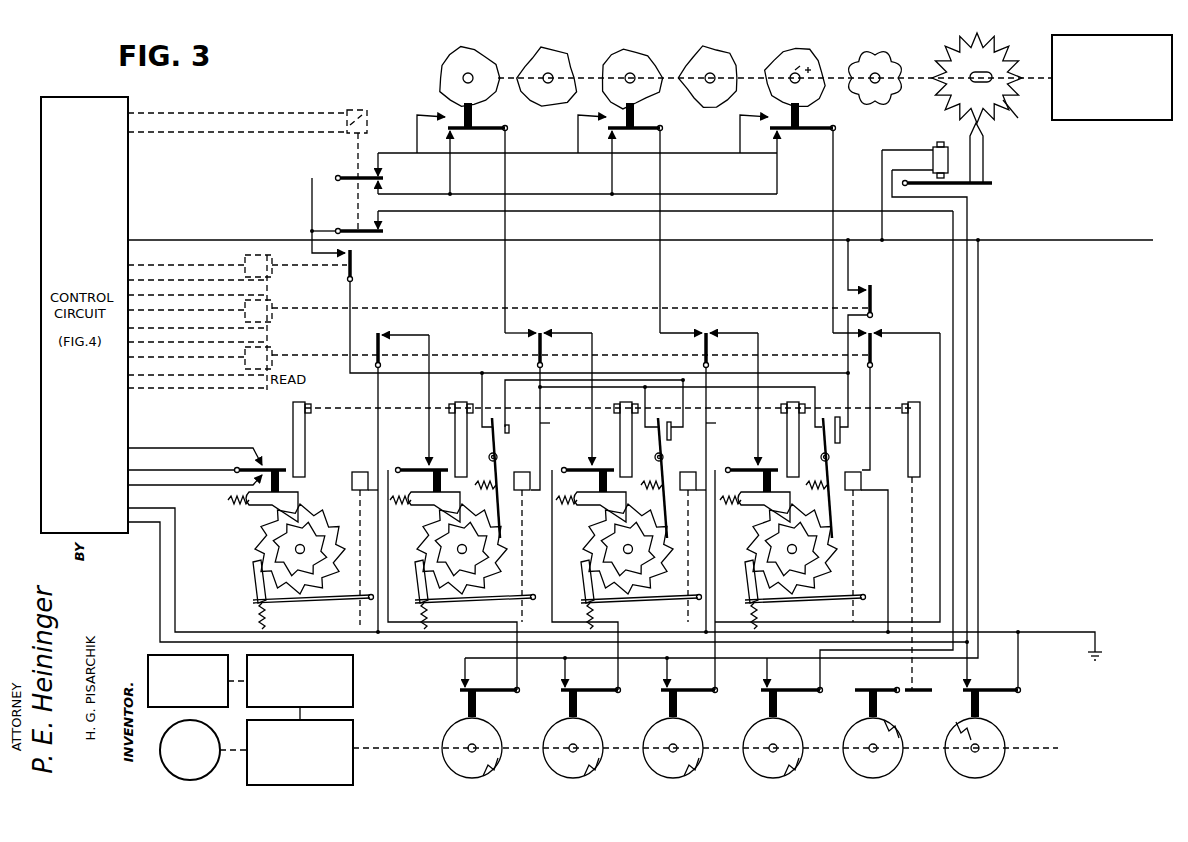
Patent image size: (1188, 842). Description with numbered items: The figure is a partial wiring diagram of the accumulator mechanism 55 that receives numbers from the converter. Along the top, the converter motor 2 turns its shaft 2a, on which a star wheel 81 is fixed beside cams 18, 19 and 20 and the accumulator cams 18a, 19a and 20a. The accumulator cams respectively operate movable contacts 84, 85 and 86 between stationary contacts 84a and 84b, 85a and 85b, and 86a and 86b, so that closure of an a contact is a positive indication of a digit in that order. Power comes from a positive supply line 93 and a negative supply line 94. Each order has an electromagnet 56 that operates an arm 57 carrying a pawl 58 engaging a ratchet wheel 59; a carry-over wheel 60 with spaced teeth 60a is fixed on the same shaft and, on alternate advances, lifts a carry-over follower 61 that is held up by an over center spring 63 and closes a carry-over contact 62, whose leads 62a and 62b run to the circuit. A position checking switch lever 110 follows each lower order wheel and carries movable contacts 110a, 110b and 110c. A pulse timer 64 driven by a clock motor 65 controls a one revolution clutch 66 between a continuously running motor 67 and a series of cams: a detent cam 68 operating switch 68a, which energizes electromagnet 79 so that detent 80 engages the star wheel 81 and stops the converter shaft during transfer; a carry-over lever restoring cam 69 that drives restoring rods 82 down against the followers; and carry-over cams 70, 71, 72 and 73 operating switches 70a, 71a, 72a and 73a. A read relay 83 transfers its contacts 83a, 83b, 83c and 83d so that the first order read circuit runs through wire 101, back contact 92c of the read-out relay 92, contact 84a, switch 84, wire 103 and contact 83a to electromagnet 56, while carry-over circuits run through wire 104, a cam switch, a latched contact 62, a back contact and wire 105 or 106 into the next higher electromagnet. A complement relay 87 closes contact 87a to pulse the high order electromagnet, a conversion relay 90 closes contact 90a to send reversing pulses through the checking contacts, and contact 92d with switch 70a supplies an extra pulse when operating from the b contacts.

The converter motor 2 is at (1072, 118).
The converter motor shaft 2a is at (1005, 60).
The cam 18 is at (892, 58).
The accumulator cam 18a is at (812, 60).
The cam 19 is at (730, 60).
The accumulator cam 19a is at (650, 60).
The cam 20 is at (558, 60).
The accumulator cam 20a is at (478, 63).
The counter unit 55 is at (878, 546).
The electromagnet 56 is at (358, 470).
The arm 57 is at (330, 602).
The pawl 58 is at (253, 583).
The ratchet wheel 59 is at (258, 510).
The carry-over wheel 60 is at (278, 552).
The teeth 60a is at (265, 540).
The carry-over follower 61 is at (300, 496).
The carry-over contact 62 is at (272, 467).
The switch lead 62a is at (195, 490).
The switch lead 62b is at (195, 445).
The over center spring 63 is at (580, 505).
The pulse timer 64 is at (353, 676).
The clock motor 65 is at (150, 657).
The one revolution clutch 66 is at (353, 782).
The motor 67 is at (192, 771).
The detent cam 68 is at (990, 770).
The cam switch 68a is at (973, 690).
The carry-over lever restoring cam 69 is at (886, 768).
The carry-over cam 70 is at (794, 770).
The switch 70a is at (773, 690).
The carry-over cam 71 is at (694, 770).
The switch 71a is at (673, 690).
The carry-over cam 72 is at (594, 770).
The switch 72a is at (571, 690).
The carry-over cam 73 is at (493, 770).
The cam switch 73a is at (470, 690).
The electromagnet 79 is at (934, 149).
The detent 80 is at (984, 146).
The star wheel 81 is at (1021, 116).
The restoring rods 82 is at (305, 430).
The read relay 83 is at (245, 360).
The read relay contact 83a is at (874, 335).
The read relay contact 83b is at (709, 336).
The read relay contact 83c is at (543, 336).
The read relay contact 83d is at (382, 336).
The movable contact 84 is at (814, 127).
The stationary contact 84a is at (779, 149).
The stationary contact 84b is at (770, 120).
The movable contact 85 is at (628, 131).
The stationary contact 85a is at (610, 157).
The stationary contact 85b is at (612, 119).
The movable contact 86 is at (484, 127).
The stationary contact 86a is at (448, 160).
The stationary contact 86b is at (447, 128).
The complement relay 87 is at (245, 265).
The complement relay contact 87a is at (353, 258).
The conversion relay 90 is at (245, 311).
The conversion relay contact 90a is at (874, 291).
The read-out relay 92 is at (347, 128).
The back contact 92c is at (353, 180).
The read-out relay contact 92d is at (350, 231).
The positive supply line 93 is at (597, 241).
The negative supply line 94 is at (1050, 632).
The wire 101 is at (311, 191).
The wire 103 is at (835, 149).
The wire 104 is at (980, 432).
The wire 105 is at (726, 423).
The wire 106 is at (561, 423).
The position checking switch lever 110 is at (497, 497).
The movable contact 110a is at (497, 428).
The movable contact 110b is at (666, 447).
The movable contact 110c is at (828, 490).